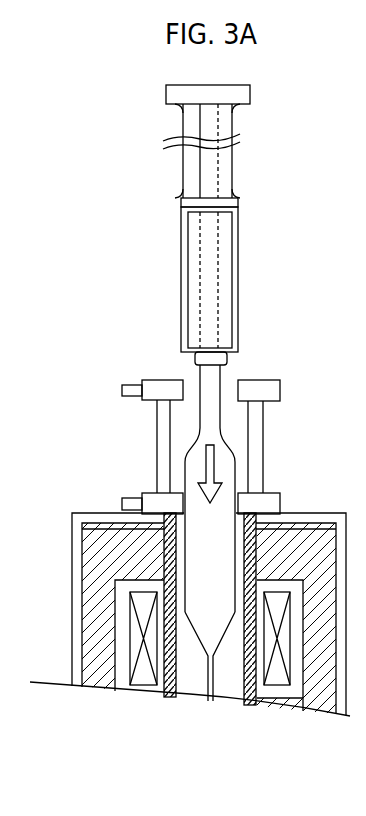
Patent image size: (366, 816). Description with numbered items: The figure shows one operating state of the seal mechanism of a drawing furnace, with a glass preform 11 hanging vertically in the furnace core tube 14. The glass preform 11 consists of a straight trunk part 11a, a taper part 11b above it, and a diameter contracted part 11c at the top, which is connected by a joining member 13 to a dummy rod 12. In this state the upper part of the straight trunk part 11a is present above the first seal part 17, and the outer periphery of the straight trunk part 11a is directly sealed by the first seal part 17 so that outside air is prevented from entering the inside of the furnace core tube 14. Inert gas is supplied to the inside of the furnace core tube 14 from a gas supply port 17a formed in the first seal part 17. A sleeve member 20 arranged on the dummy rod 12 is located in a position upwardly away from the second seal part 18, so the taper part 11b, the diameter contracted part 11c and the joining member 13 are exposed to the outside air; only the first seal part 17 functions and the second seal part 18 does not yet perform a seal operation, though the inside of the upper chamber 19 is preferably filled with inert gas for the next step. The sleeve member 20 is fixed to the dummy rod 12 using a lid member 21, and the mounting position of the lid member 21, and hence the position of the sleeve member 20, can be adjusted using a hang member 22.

The glass preform 11 is at (169, 527).
The straight trunk part 11a is at (178, 483).
The taper part 11b is at (185, 447).
The diameter contracted part 11c is at (197, 386).
The dummy rod 12 is at (218, 173).
The joining member 13 is at (226, 362).
The furnace core tube 14 is at (245, 685).
The first seal part 17 is at (281, 505).
The gas supply port 17a is at (122, 504).
The second seal part 18 is at (281, 389).
The upper chamber 19 is at (263, 437).
The sleeve member 20 is at (238, 258).
The lid member 21 is at (182, 200).
The hang member 22 is at (233, 121).